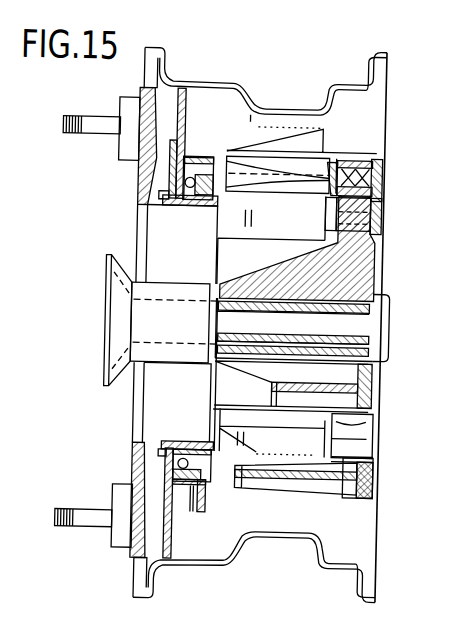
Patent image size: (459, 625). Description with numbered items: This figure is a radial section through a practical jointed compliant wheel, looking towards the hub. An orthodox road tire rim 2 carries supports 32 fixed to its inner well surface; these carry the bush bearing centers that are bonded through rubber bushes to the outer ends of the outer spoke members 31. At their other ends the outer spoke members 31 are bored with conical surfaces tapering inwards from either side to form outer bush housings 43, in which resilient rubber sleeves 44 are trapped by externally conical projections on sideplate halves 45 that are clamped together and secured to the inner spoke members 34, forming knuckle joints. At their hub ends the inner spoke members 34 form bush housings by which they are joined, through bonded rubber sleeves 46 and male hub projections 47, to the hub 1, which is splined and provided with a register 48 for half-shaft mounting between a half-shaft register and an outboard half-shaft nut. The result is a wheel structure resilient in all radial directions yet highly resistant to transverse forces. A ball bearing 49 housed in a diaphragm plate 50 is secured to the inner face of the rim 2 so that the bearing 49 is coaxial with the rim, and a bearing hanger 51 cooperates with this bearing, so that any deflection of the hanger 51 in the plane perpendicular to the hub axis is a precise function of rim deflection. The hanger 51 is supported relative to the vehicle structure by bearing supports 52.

The hub 1 is at (167, 335).
The road tire rim 2 is at (210, 79).
The outer spoke member 31 is at (256, 160).
The support 32 is at (324, 132).
The inner spoke member 34 is at (403, 425).
The outer bush housing 43 is at (346, 158).
The resilient rubber sleeve 44 is at (366, 155).
The sideplate half 45 is at (370, 175).
The bonded rubber sleeve 46 is at (363, 318).
The male hub projection 47 is at (363, 328).
The register 48 is at (118, 321).
The ball bearing 49 is at (195, 205).
The diaphragm plate 50 is at (178, 87).
The bearing hanger 51 is at (142, 107).
The bearing support 52 is at (93, 137).